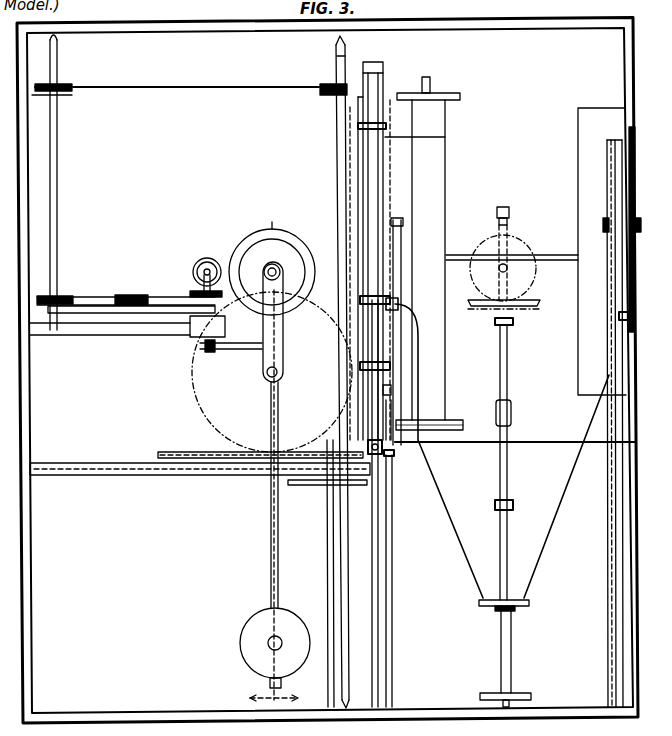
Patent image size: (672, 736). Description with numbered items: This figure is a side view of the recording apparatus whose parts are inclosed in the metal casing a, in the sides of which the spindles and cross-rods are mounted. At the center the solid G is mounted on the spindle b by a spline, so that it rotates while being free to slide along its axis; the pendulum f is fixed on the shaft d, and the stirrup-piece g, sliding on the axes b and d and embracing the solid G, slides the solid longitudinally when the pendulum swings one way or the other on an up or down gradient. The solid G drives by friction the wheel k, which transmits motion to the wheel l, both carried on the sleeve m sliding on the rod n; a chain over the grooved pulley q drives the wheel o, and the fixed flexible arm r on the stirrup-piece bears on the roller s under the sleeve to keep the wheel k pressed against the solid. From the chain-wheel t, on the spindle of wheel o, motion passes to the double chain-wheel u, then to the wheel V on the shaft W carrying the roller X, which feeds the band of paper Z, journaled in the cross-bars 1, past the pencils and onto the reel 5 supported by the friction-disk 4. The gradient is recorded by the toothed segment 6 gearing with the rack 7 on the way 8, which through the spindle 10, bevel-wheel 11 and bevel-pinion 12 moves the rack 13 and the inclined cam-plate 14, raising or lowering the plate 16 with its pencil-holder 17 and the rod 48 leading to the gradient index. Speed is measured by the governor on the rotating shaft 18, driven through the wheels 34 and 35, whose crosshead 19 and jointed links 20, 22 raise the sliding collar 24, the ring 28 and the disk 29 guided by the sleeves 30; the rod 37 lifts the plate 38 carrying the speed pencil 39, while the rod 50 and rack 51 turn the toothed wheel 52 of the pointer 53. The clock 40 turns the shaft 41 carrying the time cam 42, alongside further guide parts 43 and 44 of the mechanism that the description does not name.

The metal casing a is at (28, 258).
The chain-wheel t is at (70, 92).
The double chain-wheel u is at (65, 87).
The wheel V is at (323, 83).
The shaft W is at (336, 57).
The roller X is at (346, 268).
The guide rail 43 is at (370, 125).
The connecting line 44 is at (445, 137).
The cross-bar 1 is at (375, 486).
The bevel-pinion 12 is at (393, 478).
The rack 13 is at (382, 450).
The cam 42 is at (397, 222).
The pencil-holder 17 is at (390, 366).
The vertically-sliding plate 16 is at (392, 390).
The cam-plate 14 is at (392, 413).
The pencil 39 is at (368, 298).
The plate 38 is at (398, 305).
The rod 37 is at (452, 505).
The reel 5 is at (428, 248).
The friction-disk 4 is at (463, 426).
The rod 48 is at (460, 444).
The shaft 41 is at (548, 255).
The wheel 34 is at (538, 282).
The rotating shaft 18 is at (499, 227).
The wheel 35 is at (478, 306).
The crosshead 19 is at (513, 321).
The jointed link 20 is at (507, 372).
The jointed link 22 is at (508, 480).
The sliding collar 24 is at (513, 506).
The disk 29 is at (530, 602).
The ring 28 is at (516, 607).
The sleeve 30 is at (512, 658).
The rod 50 is at (568, 488).
The clock 40 is at (578, 302).
The toothed wheel 52 is at (618, 193).
The pointer 53 is at (634, 170).
The rack 51 is at (629, 317).
The spindle b is at (276, 272).
The solid G is at (268, 217).
The band of paper Z is at (307, 211).
The toothed segment 6 is at (192, 405).
The stirrup-piece g is at (278, 330).
The shaft d is at (278, 372).
The pendulum f is at (279, 583).
The spindle 10 is at (332, 561).
The wheel k is at (193, 264).
The wheel l is at (192, 293).
The wheel o is at (72, 298).
The grooved pulley q is at (130, 297).
The rod n is at (97, 333).
The sleeve m is at (192, 332).
The roller s is at (210, 352).
The fixed flexible arm r is at (244, 350).
The rack 7 is at (178, 453).
The rod or way 8 is at (183, 476).
The bevel-wheel 11 is at (303, 486).